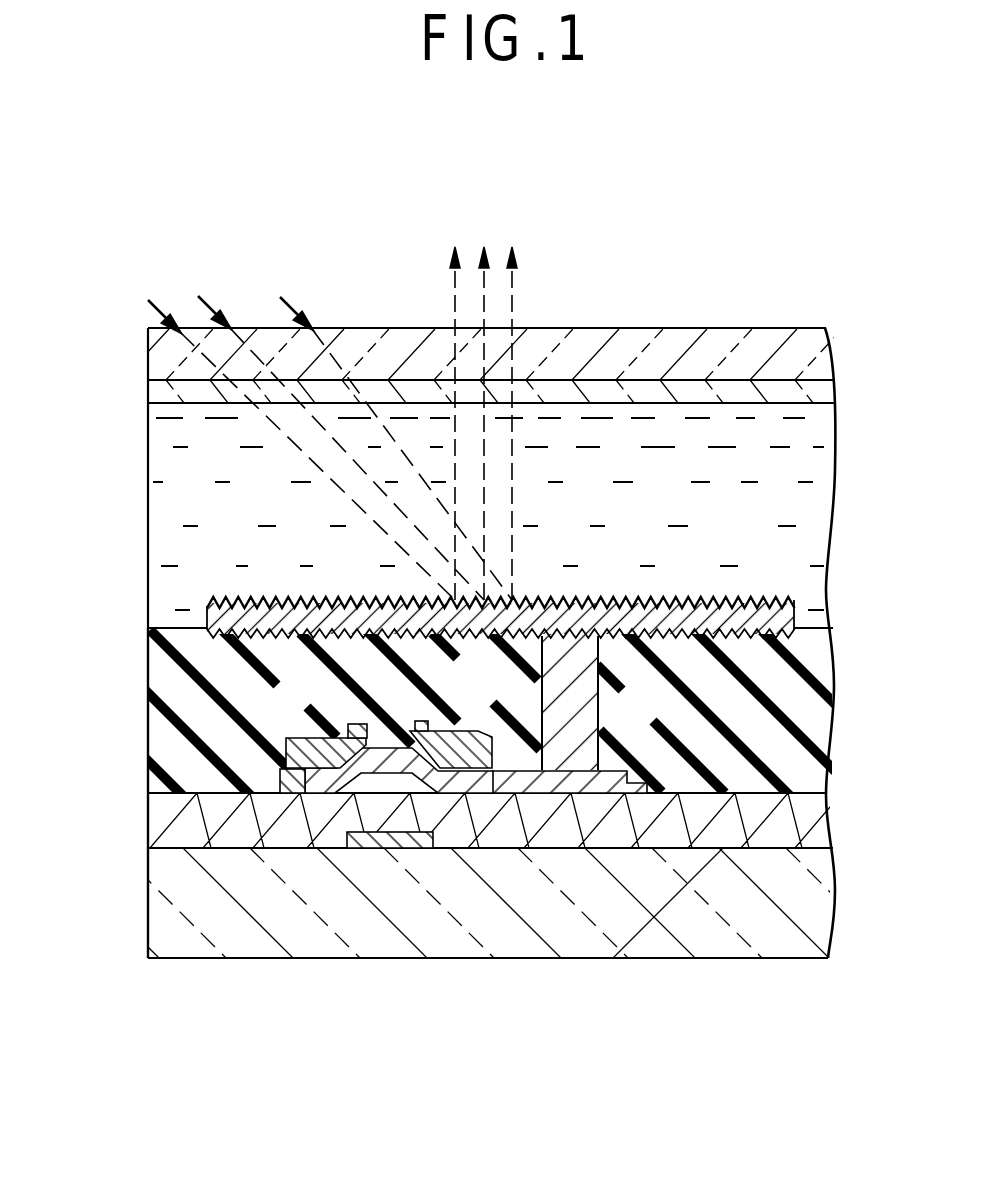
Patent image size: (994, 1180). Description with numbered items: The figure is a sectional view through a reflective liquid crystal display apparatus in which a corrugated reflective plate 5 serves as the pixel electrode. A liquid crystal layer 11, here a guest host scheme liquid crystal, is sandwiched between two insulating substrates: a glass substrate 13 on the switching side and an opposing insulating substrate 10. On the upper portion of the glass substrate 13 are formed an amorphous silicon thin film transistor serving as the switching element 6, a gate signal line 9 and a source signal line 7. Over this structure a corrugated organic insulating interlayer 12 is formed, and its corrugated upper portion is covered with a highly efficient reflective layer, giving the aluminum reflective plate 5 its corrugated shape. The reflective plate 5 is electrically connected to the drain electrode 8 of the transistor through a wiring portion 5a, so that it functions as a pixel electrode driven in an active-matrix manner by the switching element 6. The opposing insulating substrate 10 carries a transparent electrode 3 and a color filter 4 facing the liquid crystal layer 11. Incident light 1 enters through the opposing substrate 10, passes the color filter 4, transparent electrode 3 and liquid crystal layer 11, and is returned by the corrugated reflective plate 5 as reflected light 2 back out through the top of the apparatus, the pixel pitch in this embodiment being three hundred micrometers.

The incident light 1 is at (293, 288).
The reflected light 2 is at (522, 244).
The transparent electrode 3 is at (735, 342).
The color filter 4 is at (147, 392).
The reflective plate 5 is at (258, 606).
The wiring portion 5a is at (552, 683).
The switching element 6 is at (133, 955).
The source signal line 7 is at (337, 737).
The drain electrode 8 is at (616, 772).
The gate signal line 9 is at (375, 840).
The insulating substrate 10 is at (849, 327).
The liquid crystal layer 11 is at (849, 620).
The corrugated insulating interlayer 12 is at (849, 630).
The glass substrate 13 is at (849, 955).